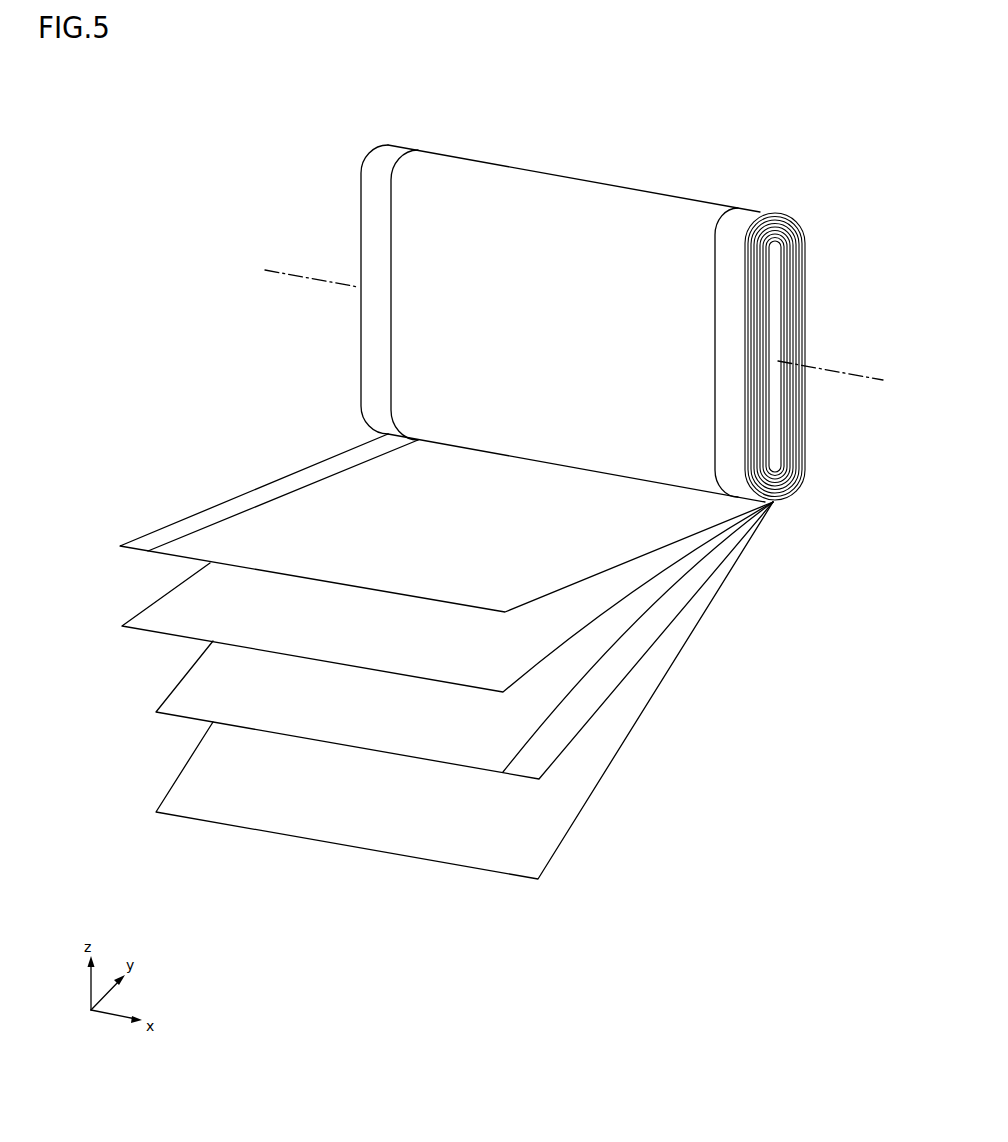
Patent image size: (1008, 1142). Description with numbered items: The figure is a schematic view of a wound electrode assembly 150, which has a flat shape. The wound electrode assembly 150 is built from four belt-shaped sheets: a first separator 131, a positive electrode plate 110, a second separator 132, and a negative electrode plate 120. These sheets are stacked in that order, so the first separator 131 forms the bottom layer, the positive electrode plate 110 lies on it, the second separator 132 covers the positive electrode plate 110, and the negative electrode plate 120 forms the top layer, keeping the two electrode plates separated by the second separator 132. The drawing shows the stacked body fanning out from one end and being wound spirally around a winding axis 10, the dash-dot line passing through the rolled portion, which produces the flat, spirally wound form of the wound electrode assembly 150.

The wound electrode assembly 150 is at (248, 120).
The winding axis 10 is at (832, 367).
The positive electrode plate 110 is at (517, 728).
The negative electrode plate 120 is at (298, 513).
The first separator 131 is at (204, 820).
The second separator 132 is at (192, 635).